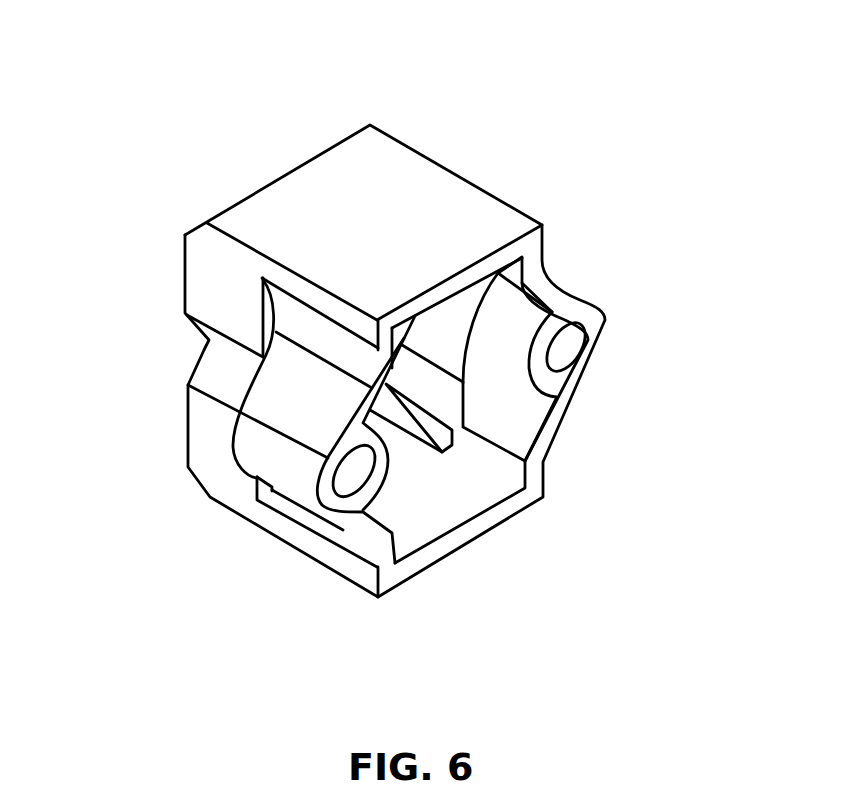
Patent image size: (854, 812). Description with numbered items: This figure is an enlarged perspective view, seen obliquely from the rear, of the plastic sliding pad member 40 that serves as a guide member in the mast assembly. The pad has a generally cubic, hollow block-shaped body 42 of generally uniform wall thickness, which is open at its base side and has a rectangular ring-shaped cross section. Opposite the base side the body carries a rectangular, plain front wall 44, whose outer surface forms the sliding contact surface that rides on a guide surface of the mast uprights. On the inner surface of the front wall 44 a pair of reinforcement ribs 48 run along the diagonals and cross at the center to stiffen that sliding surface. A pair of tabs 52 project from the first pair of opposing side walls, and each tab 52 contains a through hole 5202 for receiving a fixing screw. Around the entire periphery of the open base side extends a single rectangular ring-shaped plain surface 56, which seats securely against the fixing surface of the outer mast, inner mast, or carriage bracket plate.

The sliding pad member 40 is at (466, 161).
The block-shaped body 42 is at (476, 211).
The front wall 44 is at (183, 268).
The reinforcement ribs 48 is at (420, 418).
The tabs 52 is at (570, 285).
The through hole 5202 is at (587, 333).
The plain surface 56 is at (538, 497).